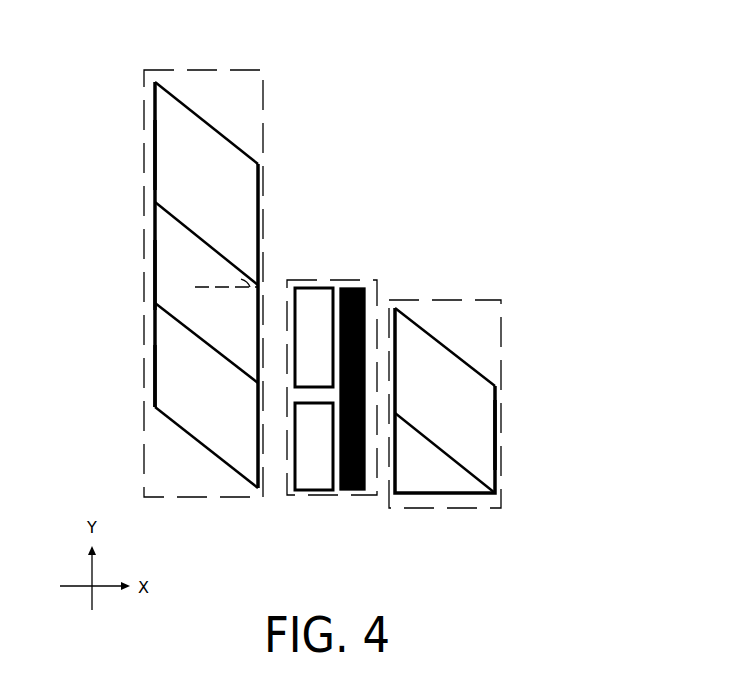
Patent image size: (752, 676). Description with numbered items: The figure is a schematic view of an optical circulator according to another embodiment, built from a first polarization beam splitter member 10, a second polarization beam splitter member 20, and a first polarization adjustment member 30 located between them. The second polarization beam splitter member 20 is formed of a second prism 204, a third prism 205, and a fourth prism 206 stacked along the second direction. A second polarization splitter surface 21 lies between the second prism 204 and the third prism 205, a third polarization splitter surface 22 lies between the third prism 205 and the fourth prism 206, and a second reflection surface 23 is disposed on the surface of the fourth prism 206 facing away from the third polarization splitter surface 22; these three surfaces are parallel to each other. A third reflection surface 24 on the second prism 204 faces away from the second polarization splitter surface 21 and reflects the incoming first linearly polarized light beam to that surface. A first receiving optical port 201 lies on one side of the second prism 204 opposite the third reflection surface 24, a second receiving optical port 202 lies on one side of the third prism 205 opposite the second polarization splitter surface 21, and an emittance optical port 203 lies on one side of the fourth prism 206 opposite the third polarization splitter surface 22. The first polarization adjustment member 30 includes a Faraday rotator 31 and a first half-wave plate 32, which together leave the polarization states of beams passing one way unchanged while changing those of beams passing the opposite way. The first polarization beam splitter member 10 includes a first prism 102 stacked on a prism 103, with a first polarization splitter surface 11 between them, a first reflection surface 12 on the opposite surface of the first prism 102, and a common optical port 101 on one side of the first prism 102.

The first polarization beam splitter member 10 is at (490, 393).
The first polarization splitter surface 11 is at (433, 452).
The first reflection surface 12 is at (470, 366).
The common optical port 101 is at (503, 430).
The first prism 102 is at (470, 396).
The prism 103 is at (458, 482).
The second polarization beam splitter member 20 is at (192, 253).
The second polarization splitter surface 21 is at (197, 236).
The third polarization splitter surface 22 is at (197, 337).
The second reflection surface 23 is at (197, 441).
The third reflection surface 24 is at (203, 121).
The first receiving optical port 201 is at (148, 158).
The second receiving optical port 202 is at (148, 275).
The emittance optical port 203 is at (148, 383).
The second prism 204 is at (172, 117).
The third prism 205 is at (170, 235).
The fourth prism 206 is at (170, 334).
The first polarization adjustment member 30 is at (349, 393).
The Faraday rotator 31 is at (309, 478).
The first half-wave plate 32 is at (350, 490).